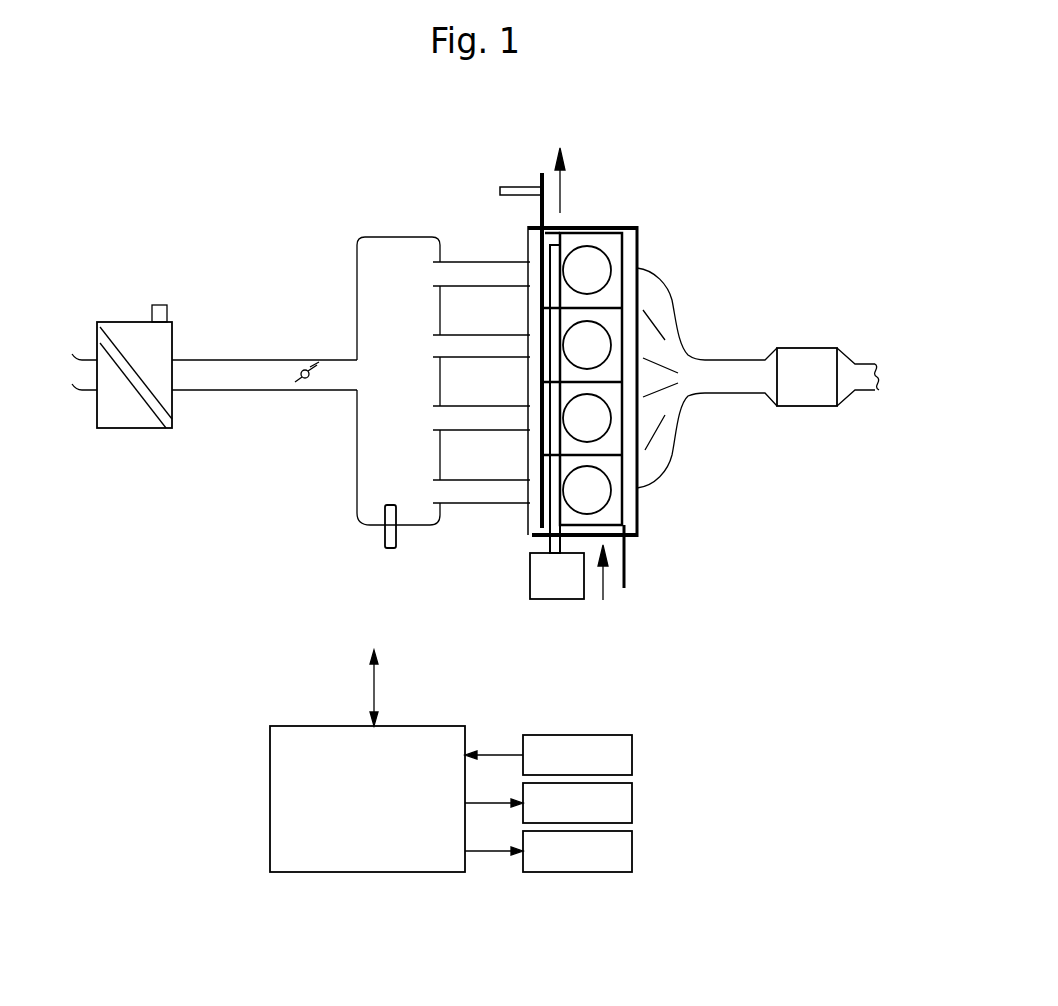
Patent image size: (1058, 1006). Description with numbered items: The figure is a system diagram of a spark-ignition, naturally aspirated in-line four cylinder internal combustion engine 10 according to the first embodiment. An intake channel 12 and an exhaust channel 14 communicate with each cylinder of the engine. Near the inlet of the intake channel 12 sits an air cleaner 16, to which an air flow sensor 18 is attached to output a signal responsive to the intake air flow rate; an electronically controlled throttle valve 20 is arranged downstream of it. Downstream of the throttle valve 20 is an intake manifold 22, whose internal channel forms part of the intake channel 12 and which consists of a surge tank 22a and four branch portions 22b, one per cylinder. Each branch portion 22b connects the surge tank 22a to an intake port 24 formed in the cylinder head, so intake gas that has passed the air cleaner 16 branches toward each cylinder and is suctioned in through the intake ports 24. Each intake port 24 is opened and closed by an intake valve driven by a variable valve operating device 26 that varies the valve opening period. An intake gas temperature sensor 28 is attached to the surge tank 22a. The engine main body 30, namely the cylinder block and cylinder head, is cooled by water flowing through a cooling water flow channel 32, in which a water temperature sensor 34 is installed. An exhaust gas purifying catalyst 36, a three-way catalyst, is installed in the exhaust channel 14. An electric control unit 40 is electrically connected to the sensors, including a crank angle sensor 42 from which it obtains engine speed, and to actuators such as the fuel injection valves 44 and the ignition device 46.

The internal combustion engine 10 is at (755, 215).
The intake channel 12 is at (267, 335).
The exhaust channel 14 is at (713, 333).
The air cleaner 16 is at (172, 338).
The air flow sensor 18 is at (160, 302).
The throttle valve 20 is at (303, 381).
The intake manifold 22 is at (391, 399).
The surge tank 22a is at (360, 508).
The branch portions 22b is at (478, 350).
The intake port 24 is at (548, 258).
The variable valve operating device 26 is at (560, 600).
The intake gas temperature sensor 28 is at (390, 550).
The engine main body 30 is at (639, 522).
The cooling water flow channel 32 is at (626, 578).
The water temperature sensor 34 is at (518, 186).
The exhaust gas purifying catalyst 36 is at (803, 362).
The electric control unit 40 is at (268, 794).
The crank angle sensor 42 is at (633, 757).
The fuel injection valves 44 is at (633, 805).
The ignition device 46 is at (633, 853).